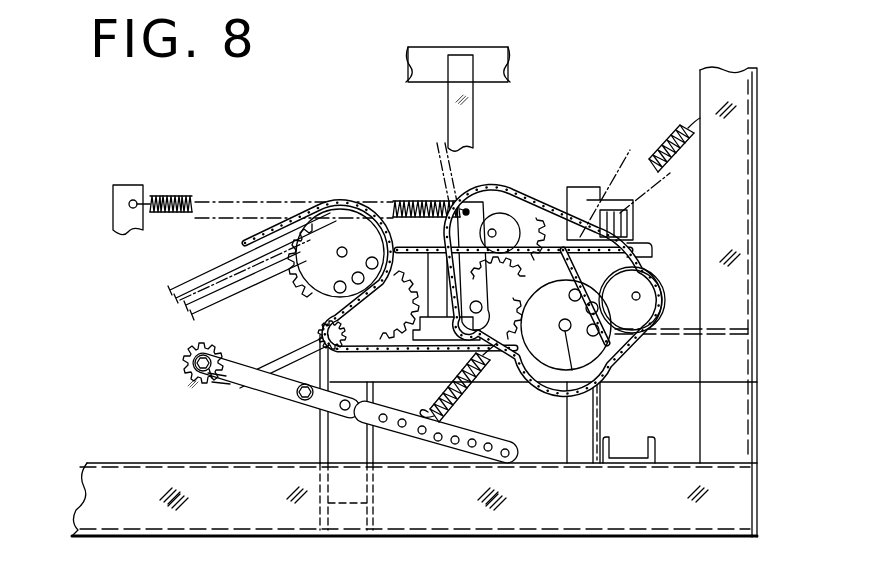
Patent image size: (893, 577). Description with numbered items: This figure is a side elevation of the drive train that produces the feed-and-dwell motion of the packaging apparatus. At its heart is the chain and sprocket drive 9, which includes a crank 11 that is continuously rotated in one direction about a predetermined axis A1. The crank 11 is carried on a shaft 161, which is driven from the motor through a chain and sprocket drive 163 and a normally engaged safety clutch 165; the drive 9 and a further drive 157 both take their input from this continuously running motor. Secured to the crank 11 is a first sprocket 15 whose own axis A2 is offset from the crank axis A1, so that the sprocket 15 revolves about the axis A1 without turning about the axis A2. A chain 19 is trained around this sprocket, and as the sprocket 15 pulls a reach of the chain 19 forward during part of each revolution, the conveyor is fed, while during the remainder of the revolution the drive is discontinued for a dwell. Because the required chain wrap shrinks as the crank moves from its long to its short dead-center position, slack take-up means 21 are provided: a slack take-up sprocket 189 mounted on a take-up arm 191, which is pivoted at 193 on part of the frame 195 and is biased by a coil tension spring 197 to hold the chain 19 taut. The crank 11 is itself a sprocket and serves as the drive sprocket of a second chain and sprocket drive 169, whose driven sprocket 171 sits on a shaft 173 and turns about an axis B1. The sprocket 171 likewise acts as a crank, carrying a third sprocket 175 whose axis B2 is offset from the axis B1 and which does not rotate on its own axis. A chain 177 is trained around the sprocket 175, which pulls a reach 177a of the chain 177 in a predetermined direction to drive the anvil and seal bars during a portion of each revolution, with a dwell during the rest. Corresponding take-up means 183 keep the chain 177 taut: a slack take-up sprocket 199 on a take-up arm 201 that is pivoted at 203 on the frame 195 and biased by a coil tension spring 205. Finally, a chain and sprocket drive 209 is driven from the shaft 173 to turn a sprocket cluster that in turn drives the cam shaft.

The chain and sprocket drive 9 is at (515, 185).
The crank 11 is at (640, 298).
The first sprocket 15 is at (606, 352).
The chain 19 is at (572, 370).
The means for maintaining the chain taut 21 is at (500, 350).
The drive 157 is at (246, 313).
The shaft 161 is at (645, 257).
The chain and sprocket drive 163 is at (547, 193).
The safety clutch 165 is at (636, 210).
The second chain and sprocket drive 169 is at (431, 355).
The driven sprocket 171 is at (420, 249).
The shaft 173 is at (318, 330).
The third sprocket 175 is at (332, 205).
The chain 177 is at (250, 244).
The reach of the chain 177a is at (180, 290).
The means for maintaining chain taut 183 is at (186, 376).
The slack take-up sprocket 189 is at (561, 331).
The take-up arm 191 is at (470, 132).
The pivot 193 is at (448, 72).
The frame 195 is at (500, 62).
The coil tension spring 197 is at (420, 203).
The slack take-up sprocket 199 is at (194, 352).
The take-up arm 201 is at (274, 396).
The pivot 203 is at (332, 430).
The coil tension spring 205 is at (465, 393).
The chain and sprocket drive 209 is at (302, 258).
The crank axis A1 is at (644, 300).
The sprocket axis A2 is at (583, 350).
The axis of shaft 173 B1 is at (385, 314).
The axis of sprocket 175 B2 is at (340, 250).